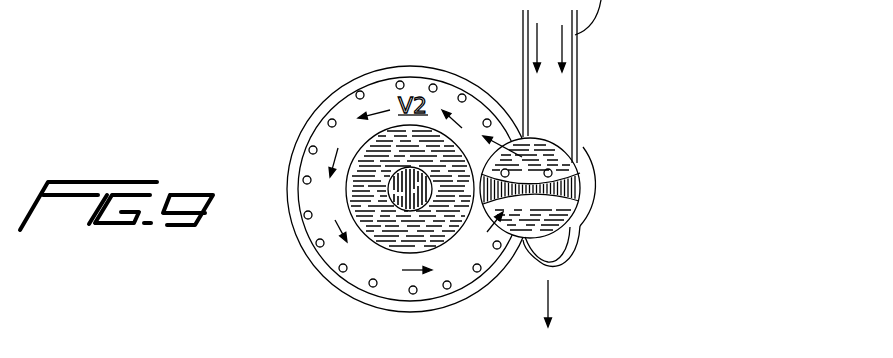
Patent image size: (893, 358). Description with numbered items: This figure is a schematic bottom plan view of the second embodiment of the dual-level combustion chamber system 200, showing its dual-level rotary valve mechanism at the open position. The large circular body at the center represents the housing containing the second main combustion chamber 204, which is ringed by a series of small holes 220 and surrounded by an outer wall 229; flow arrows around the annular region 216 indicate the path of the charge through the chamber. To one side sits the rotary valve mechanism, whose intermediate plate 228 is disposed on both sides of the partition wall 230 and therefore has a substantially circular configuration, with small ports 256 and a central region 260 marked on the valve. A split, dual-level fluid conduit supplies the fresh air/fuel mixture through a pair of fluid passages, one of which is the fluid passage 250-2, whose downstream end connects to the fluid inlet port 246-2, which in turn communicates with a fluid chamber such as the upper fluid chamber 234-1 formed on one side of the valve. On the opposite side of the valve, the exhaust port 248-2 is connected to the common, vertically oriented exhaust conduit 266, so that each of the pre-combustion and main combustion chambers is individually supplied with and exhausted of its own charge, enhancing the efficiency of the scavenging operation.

The dual-level combustion chamber system 200 is at (600, 78).
The second main combustion chamber 204 is at (315, 227).
The rotor disc 216 is at (395, 275).
The holes 220 is at (313, 150).
The intermediate plate 228 is at (507, 232).
The inner ring 229 is at (483, 165).
The partition wall 230 is at (572, 192).
The upper fluid chamber 234-1 is at (60, 350).
The fluid inlet port 246-2 is at (543, 140).
The exhaust port 248-2 is at (580, 250).
The fluid passage 250-2 is at (543, 55).
The valve ports 256 is at (552, 172).
The hub 260 is at (389, 186).
The exhaust conduit 266 is at (526, 250).